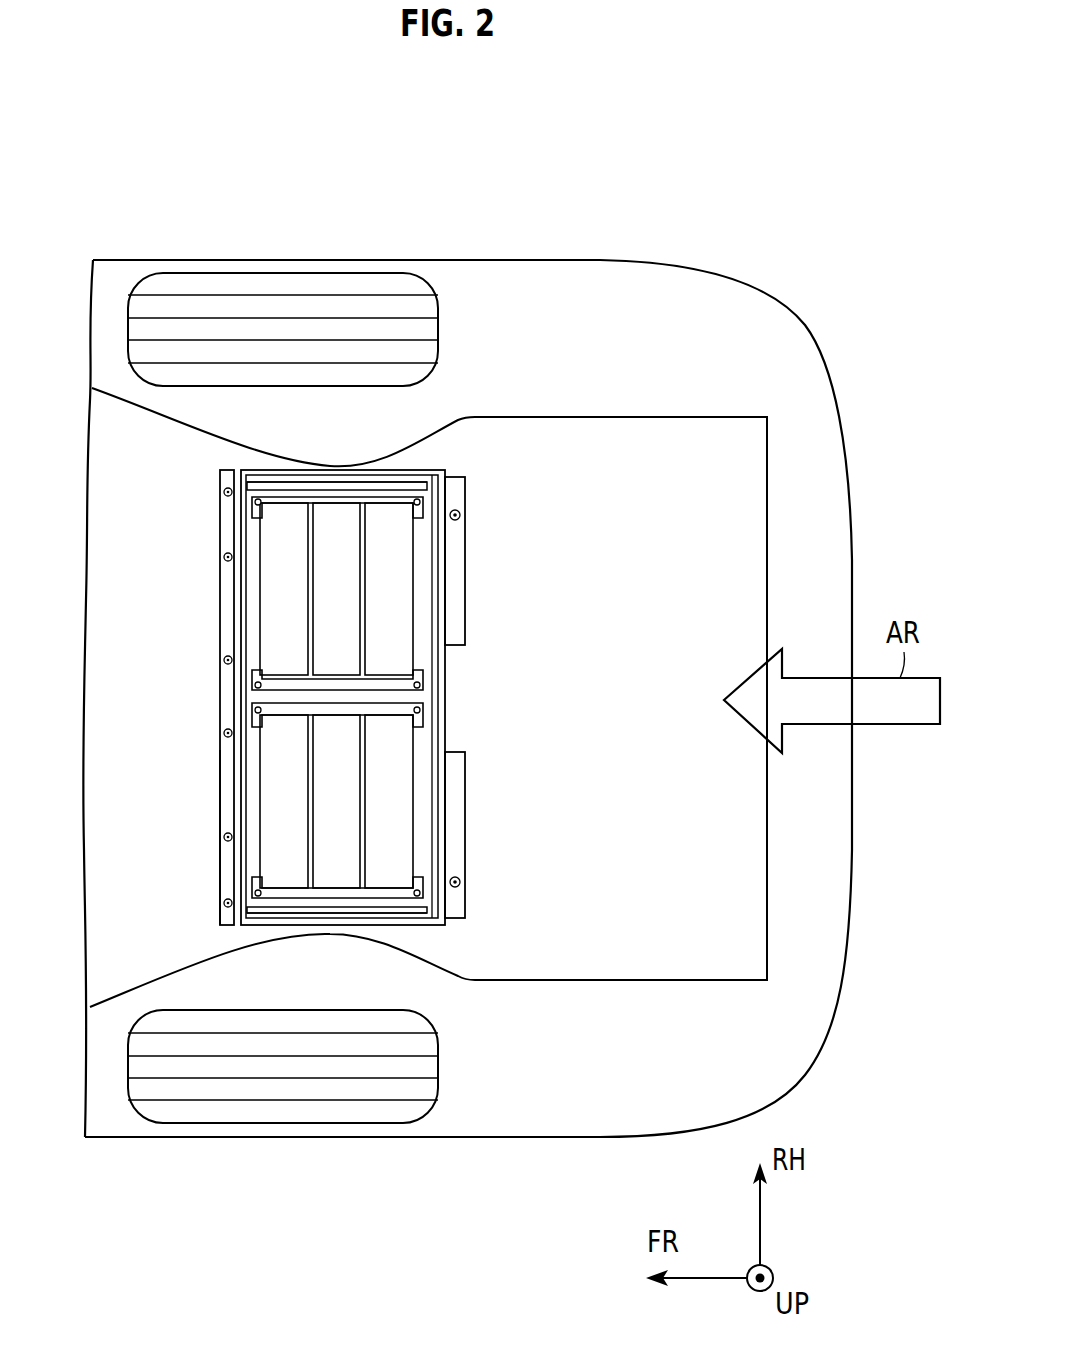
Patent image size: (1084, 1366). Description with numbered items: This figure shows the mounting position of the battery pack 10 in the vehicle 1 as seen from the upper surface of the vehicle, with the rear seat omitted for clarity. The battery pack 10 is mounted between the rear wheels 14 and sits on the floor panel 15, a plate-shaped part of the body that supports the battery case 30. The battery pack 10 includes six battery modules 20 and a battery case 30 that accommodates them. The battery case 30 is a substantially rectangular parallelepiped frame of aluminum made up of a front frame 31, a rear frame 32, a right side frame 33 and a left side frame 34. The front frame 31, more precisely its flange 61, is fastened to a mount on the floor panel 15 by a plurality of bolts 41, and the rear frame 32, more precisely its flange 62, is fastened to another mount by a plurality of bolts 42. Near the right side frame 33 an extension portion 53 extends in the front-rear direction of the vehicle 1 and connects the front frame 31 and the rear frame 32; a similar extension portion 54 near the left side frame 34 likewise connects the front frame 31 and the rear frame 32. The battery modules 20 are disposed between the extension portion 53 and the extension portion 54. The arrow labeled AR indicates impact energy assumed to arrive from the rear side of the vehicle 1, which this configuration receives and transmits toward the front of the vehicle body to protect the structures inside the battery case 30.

The vehicle 1 is at (678, 206).
The battery pack 10 is at (346, 678).
The rear wheels 14 is at (228, 306).
The floor panel 15 is at (745, 446).
The battery modules 20 is at (280, 550).
The battery case 30 is at (346, 695).
The front frame 31 is at (240, 600).
The rear frame 32 is at (445, 584).
The right side frame 33 is at (265, 490).
The left side frame 34 is at (265, 910).
The bolts 41 is at (224, 492).
The bolts 42 is at (460, 515).
The extension portion 53 is at (405, 476).
The extension portion 54 is at (405, 925).
The flange 61 is at (240, 782).
The flange 62 is at (452, 816).